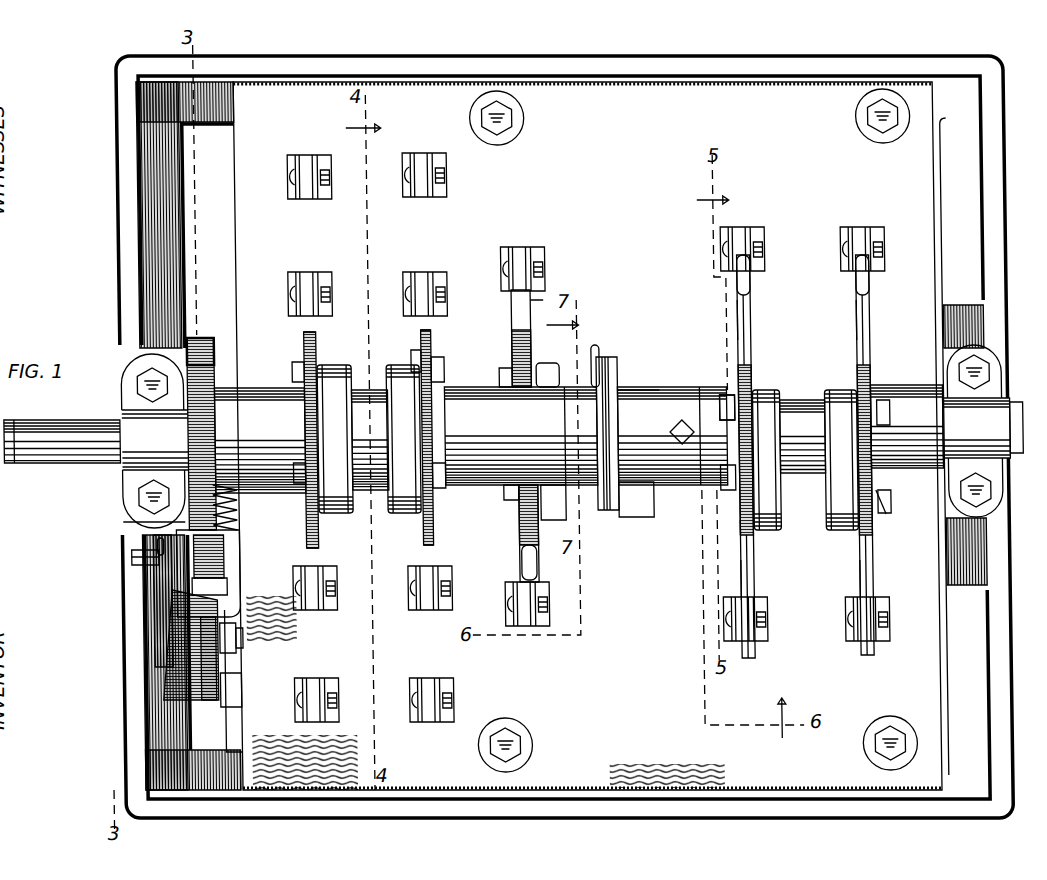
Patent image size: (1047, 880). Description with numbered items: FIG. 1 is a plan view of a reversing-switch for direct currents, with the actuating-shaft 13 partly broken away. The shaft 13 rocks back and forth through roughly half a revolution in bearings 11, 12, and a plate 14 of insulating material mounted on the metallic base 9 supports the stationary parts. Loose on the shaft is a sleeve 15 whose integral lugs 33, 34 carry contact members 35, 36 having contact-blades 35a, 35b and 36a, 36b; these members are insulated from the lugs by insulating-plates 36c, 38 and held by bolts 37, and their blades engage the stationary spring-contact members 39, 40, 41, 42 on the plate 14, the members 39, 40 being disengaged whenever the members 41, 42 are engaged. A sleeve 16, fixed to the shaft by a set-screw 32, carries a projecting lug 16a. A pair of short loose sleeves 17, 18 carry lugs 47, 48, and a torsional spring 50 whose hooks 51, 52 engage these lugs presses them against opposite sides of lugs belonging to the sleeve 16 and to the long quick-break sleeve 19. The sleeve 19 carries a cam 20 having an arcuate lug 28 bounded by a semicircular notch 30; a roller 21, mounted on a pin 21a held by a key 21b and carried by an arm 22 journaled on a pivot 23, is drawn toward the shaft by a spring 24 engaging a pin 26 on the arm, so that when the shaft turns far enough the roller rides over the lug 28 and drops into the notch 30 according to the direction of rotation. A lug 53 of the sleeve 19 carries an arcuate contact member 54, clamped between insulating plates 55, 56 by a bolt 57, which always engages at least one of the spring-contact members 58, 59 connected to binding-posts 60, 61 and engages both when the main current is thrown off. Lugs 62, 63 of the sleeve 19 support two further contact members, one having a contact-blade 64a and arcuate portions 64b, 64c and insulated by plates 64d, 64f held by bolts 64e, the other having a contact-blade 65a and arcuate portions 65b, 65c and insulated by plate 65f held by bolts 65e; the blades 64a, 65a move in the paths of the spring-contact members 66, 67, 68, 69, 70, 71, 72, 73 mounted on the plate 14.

The metallic base 9 is at (965, 446).
The bearing 11 is at (983, 431).
The bearing 12 is at (155, 441).
The actuating-shaft 13 is at (62, 441).
The plate 14 is at (587, 436).
The sleeve 15 is at (906, 426).
The sleeve 16 is at (693, 436).
The projecting lug 16a is at (728, 395).
The sleeve 17 is at (672, 436).
The sleeve 18 is at (579, 436).
The quick-break sleeve 19 is at (520, 436).
The cam 20 is at (228, 405).
The roller 21 is at (208, 573).
The pin 21a is at (130, 560).
The key 21b is at (154, 546).
The arm 22 is at (160, 655).
The pivot 23 is at (232, 705).
The spring 24 is at (180, 517).
The pin 26 is at (240, 640).
The arcuate lug 28 is at (202, 434).
The notch 30 is at (205, 342).
The set-screw 32 is at (683, 420).
The lug 33 is at (841, 460).
The lug 34 is at (766, 460).
The contact member 35 is at (872, 362).
The contact-blade 35a is at (872, 300).
The contact-blade 35b is at (872, 565).
The contact member 36 is at (752, 367).
The contact-blade 36a is at (752, 312).
The contact-blade 36b is at (752, 572).
The insulating-plate 36c is at (752, 538).
The bolts 37 is at (890, 500).
The insulating-plate 38 is at (880, 515).
The stationary spring-contact member 39 is at (864, 240).
The stationary spring-contact member 40 is at (744, 240).
The stationary spring-contact member 41 is at (888, 630).
The stationary spring-contact member 42 is at (767, 630).
The lug 47 is at (606, 510).
The lug 48 is at (612, 360).
The torsional spring 50 is at (620, 390).
The hook 51 is at (635, 517).
The hook 52 is at (595, 348).
The lug 53 is at (552, 512).
The arcuate contact member 54 is at (518, 520).
The insulating plate 55 is at (507, 368).
The insulating plate 56 is at (548, 363).
The bolt 57 is at (506, 492).
The spring-contact member 58 is at (540, 300).
The spring-contact member 59 is at (520, 567).
The binding-post 60 is at (525, 262).
The binding-post 61 is at (505, 600).
The lug 62 is at (403, 439).
The lug 63 is at (335, 439).
The contact-blade 64a is at (428, 430).
The arcuate-shaped portion 64b is at (432, 332).
The arcuate-shaped portion 64c is at (432, 540).
The insulating-plate 64d is at (438, 372).
The bolts 64e is at (438, 488).
The insulating-plate 64f is at (420, 358).
The contact-blade 65a is at (300, 372).
The arcuate portion 65b is at (318, 334).
The arcuate portion 65c is at (318, 545).
The bolts 65e is at (300, 485).
The insulating-plate 65f is at (303, 362).
The spring-contact member 66 is at (306, 170).
The spring-contact member 67 is at (422, 168).
The spring-contact member 68 is at (306, 290).
The spring-contact member 69 is at (425, 290).
The spring-contact member 70 is at (316, 605).
The spring-contact member 71 is at (425, 605).
The spring-contact member 72 is at (315, 690).
The spring-contact member 73 is at (435, 690).